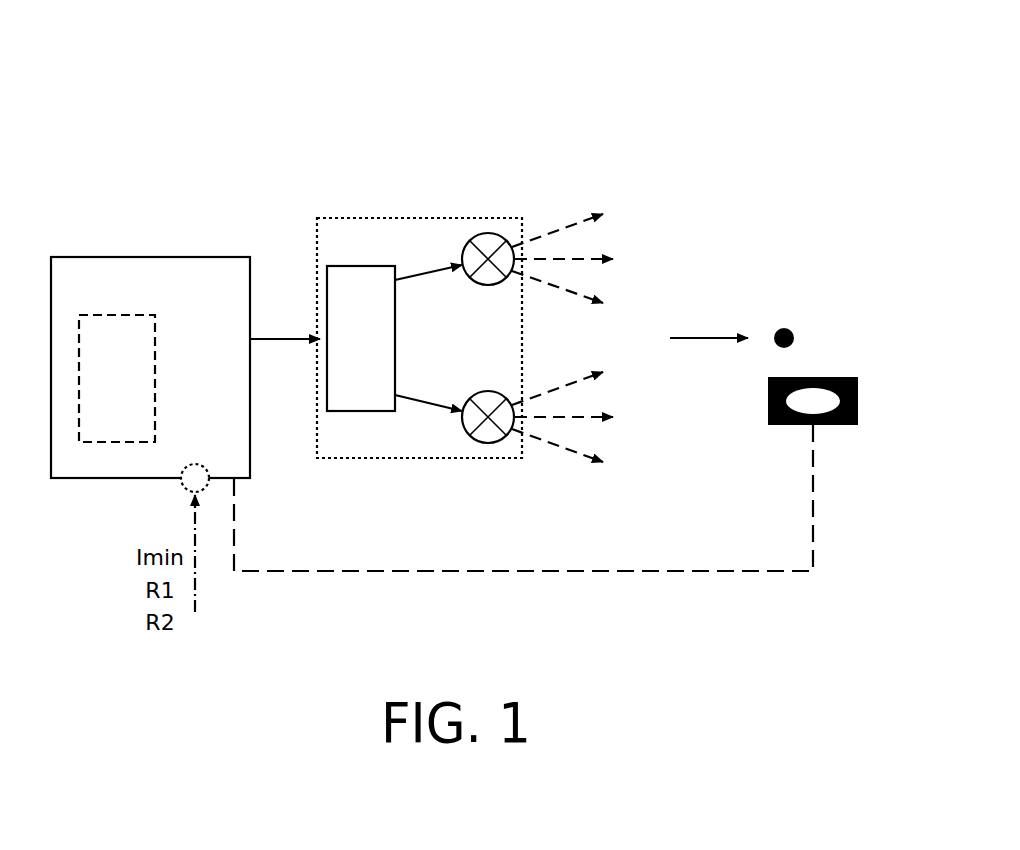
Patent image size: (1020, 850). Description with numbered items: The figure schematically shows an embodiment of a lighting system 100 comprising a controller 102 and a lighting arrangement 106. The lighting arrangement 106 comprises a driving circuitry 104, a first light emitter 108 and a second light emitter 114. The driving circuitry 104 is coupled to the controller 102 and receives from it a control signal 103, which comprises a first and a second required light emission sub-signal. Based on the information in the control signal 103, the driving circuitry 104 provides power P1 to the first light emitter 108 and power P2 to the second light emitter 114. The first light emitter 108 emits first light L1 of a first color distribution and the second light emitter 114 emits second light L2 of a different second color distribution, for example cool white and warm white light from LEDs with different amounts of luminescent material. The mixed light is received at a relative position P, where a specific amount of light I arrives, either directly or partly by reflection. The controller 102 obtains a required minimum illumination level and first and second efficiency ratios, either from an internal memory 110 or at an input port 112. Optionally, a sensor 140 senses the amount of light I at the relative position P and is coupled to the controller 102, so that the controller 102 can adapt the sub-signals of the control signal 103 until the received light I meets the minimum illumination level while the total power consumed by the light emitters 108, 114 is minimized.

The lighting system 100 is at (688, 100).
The controller 102 is at (148, 257).
The control signal 103 is at (292, 337).
The driving circuitry 104 is at (360, 411).
The lighting arrangement 106 is at (365, 218).
The first light emitter 108 is at (487, 233).
The internal memory 110 is at (118, 442).
The input port 112 is at (210, 465).
The second light emitter 114 is at (488, 443).
The sensor 140 is at (840, 377).
The power provided to the first light emitter P1 is at (417, 265).
The power provided to the second light emitter P2 is at (420, 405).
The first light L1 is at (565, 258).
The second light L2 is at (568, 418).
The received amount of light I is at (709, 320).
The relative position P is at (784, 328).